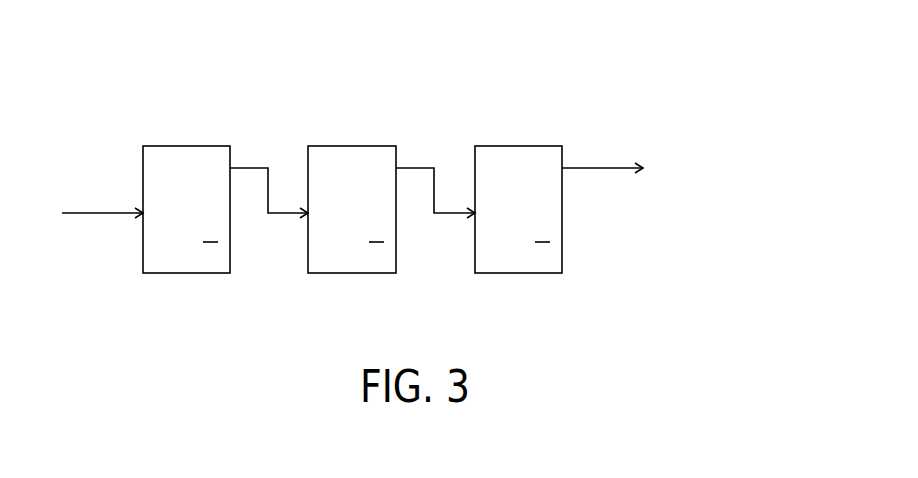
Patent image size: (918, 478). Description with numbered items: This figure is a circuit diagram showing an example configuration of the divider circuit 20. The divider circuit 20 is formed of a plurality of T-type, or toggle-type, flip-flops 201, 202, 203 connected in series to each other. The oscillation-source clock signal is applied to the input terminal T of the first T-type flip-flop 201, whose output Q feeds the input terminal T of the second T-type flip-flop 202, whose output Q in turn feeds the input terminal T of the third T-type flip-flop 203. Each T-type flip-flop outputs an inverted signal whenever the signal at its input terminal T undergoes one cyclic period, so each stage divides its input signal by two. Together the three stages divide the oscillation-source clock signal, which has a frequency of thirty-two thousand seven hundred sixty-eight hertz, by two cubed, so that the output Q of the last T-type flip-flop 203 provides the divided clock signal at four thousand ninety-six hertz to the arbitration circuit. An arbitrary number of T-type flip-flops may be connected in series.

The divider circuit 20 is at (413, 53).
The T-type flip-flop 201 is at (187, 146).
The T-type flip-flop 202 is at (353, 146).
The T-type flip-flop 203 is at (520, 146).